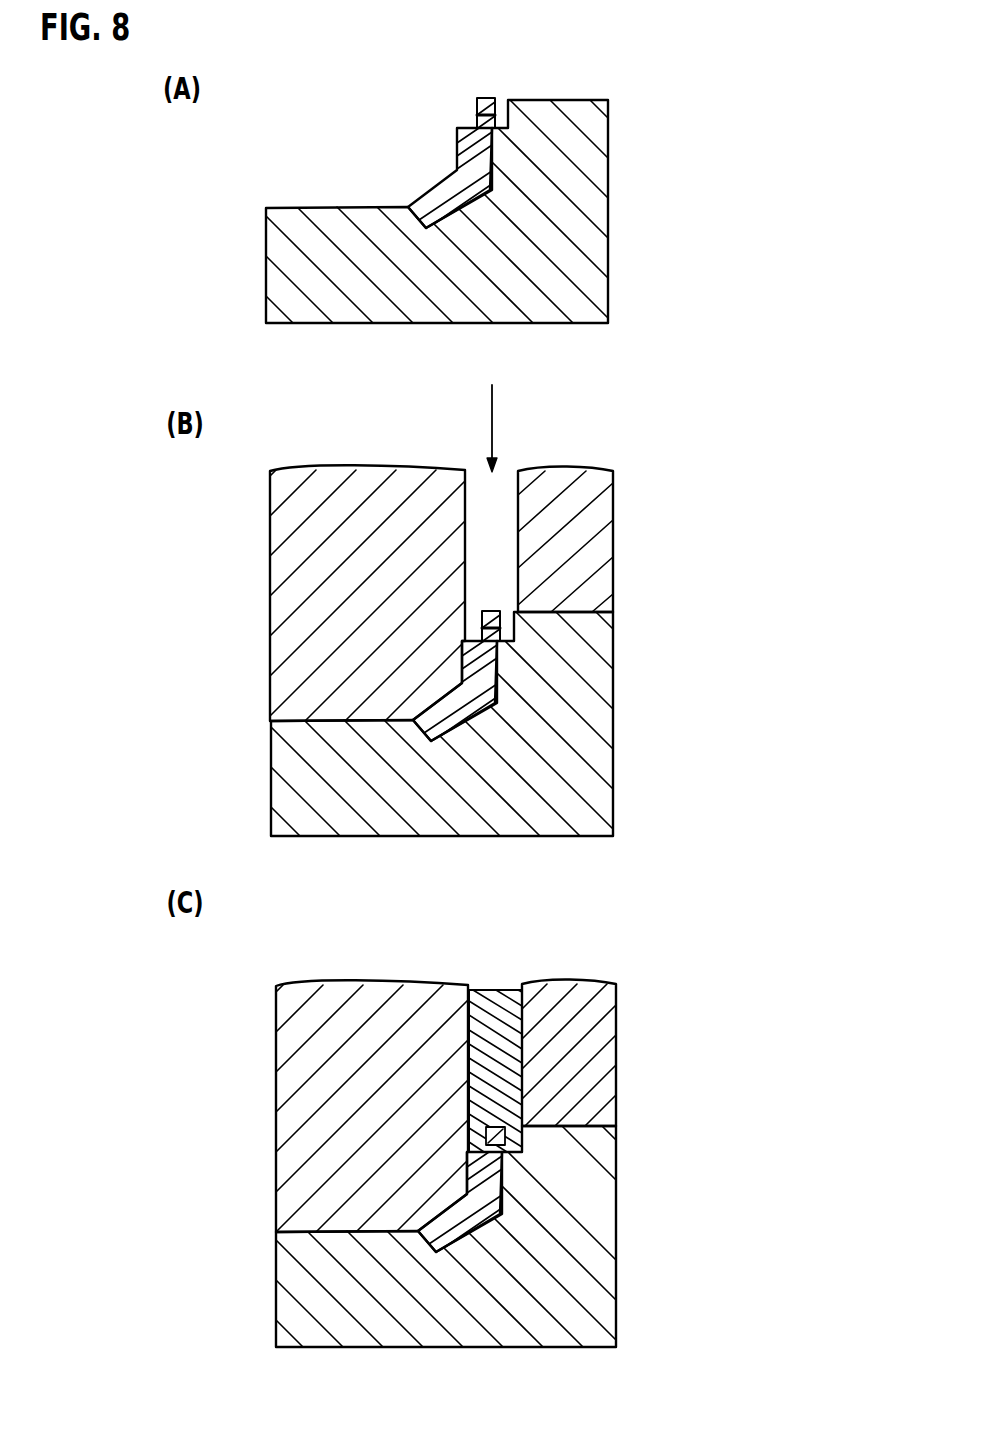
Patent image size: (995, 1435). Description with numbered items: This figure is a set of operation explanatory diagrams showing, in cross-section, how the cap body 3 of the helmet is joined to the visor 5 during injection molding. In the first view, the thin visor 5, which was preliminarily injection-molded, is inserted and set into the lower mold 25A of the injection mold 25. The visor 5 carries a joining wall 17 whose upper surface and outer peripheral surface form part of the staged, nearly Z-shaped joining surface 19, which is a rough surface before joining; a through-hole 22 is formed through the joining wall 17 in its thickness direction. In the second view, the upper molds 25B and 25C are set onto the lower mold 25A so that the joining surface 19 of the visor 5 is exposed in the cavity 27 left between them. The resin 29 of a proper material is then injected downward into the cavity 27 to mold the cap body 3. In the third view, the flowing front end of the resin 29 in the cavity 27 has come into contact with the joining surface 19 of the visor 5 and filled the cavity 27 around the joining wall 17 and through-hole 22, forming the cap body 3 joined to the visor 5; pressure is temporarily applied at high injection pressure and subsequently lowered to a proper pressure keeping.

The cap body 3 is at (508, 973).
The visor 5 is at (440, 193).
The joining wall 17 is at (484, 98).
The joining surface 19 is at (450, 108).
The through-hole 22 is at (497, 117).
The injection mold 25 is at (681, 601).
The lower mold 25A is at (590, 247).
The upper mold 25B is at (592, 526).
The upper mold 25C is at (293, 550).
The cavity 27 is at (498, 496).
The resin 29 is at (490, 413).